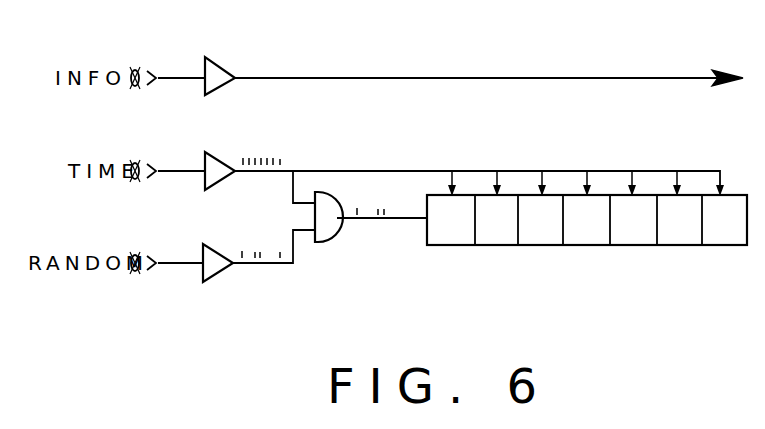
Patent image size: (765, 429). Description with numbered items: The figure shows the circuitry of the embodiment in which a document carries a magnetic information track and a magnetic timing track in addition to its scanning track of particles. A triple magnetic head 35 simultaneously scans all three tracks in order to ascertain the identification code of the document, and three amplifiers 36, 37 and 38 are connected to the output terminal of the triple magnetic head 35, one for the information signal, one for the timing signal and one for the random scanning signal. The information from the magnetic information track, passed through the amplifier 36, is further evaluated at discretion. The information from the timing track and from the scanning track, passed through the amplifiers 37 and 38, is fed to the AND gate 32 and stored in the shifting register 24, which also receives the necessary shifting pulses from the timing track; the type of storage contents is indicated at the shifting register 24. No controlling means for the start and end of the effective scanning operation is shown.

The shifting register 24 is at (655, 245).
The AND gate 32 is at (325, 242).
The triple magnetic head 35 is at (136, 88).
The amplifier 36 is at (220, 68).
The amplifier 37 is at (220, 162).
The amplifier 38 is at (218, 270).